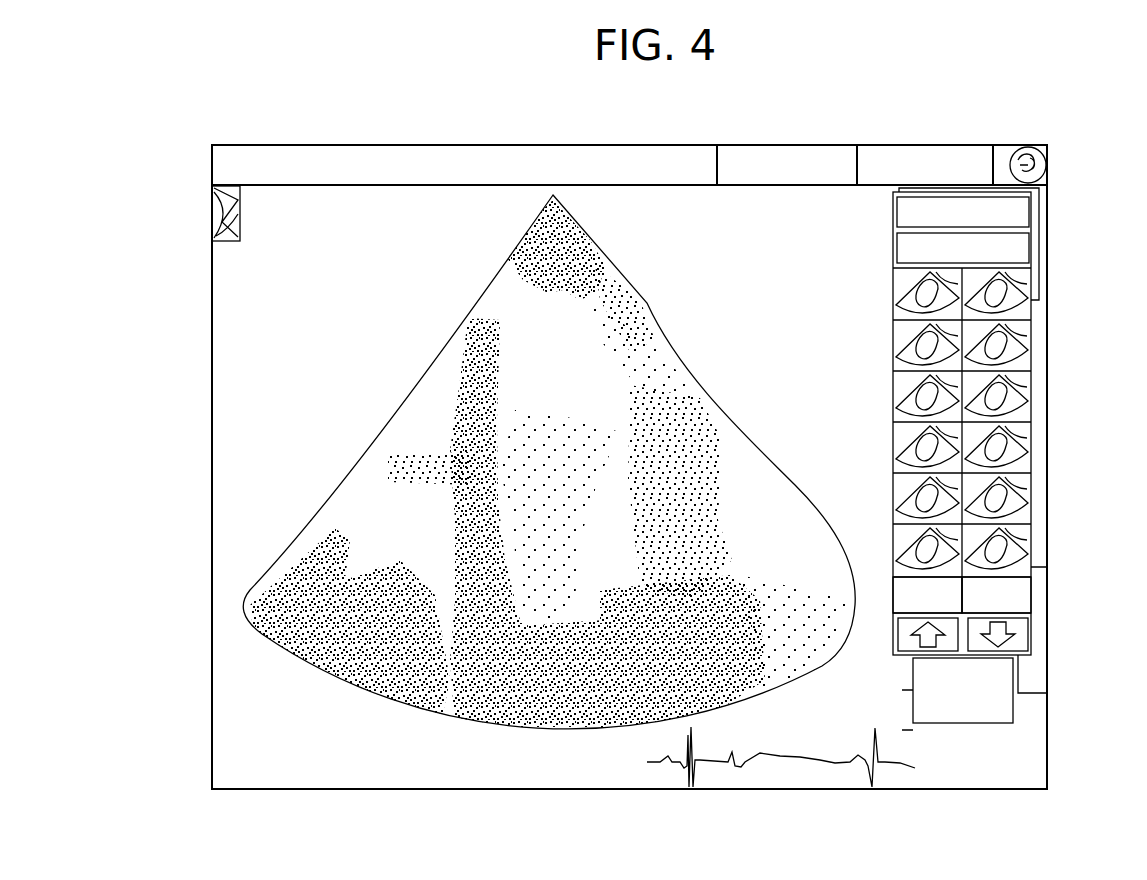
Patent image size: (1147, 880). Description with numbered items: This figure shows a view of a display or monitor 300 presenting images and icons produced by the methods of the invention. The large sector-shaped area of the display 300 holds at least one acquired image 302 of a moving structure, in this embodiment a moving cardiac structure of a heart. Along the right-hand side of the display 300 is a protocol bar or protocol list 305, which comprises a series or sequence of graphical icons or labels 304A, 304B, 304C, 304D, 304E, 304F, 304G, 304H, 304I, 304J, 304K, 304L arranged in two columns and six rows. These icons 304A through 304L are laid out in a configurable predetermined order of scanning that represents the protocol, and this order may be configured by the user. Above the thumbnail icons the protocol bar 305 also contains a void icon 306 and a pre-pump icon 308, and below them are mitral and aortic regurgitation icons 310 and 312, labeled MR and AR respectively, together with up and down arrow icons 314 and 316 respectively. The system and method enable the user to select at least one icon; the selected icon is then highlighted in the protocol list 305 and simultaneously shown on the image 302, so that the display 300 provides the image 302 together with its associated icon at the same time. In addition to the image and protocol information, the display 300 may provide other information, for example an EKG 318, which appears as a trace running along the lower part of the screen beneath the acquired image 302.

The display 300 is at (772, 137).
The acquired image 302 is at (550, 198).
The graphical icon 304A is at (893, 283).
The graphical icon 304B is at (1031, 292).
The graphical icon 304C is at (893, 335).
The graphical icon 304D is at (1031, 342).
The graphical icon 304E is at (893, 385).
The graphical icon 304F is at (1031, 394).
The graphical icon 304G is at (893, 435).
The graphical icon 304H is at (1031, 446).
The graphical icon 304I is at (893, 487).
The graphical icon 304J is at (1031, 497).
The graphical icon 304K is at (893, 540).
The graphical icon 304L is at (1031, 549).
The protocol bar 305 is at (1045, 672).
The void icon 306 is at (1010, 232).
The pre-pump icon 308 is at (973, 188).
The mitral regurgitation icon 310 is at (895, 600).
The aortic regurgitation icon 312 is at (1027, 593).
The up arrow icon 314 is at (898, 640).
The down arrow icon 316 is at (1030, 636).
The EKG 318 is at (798, 755).